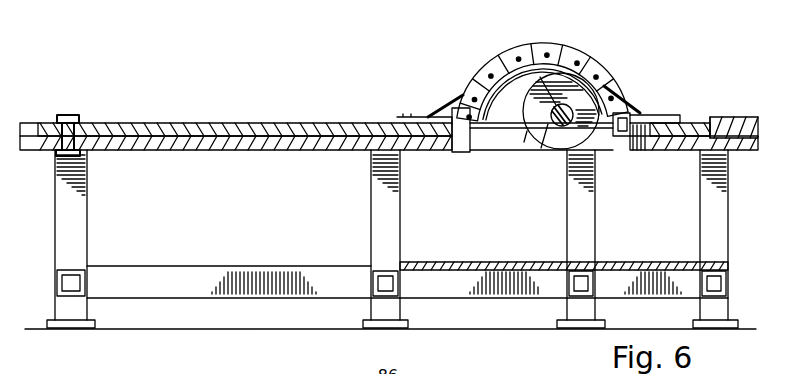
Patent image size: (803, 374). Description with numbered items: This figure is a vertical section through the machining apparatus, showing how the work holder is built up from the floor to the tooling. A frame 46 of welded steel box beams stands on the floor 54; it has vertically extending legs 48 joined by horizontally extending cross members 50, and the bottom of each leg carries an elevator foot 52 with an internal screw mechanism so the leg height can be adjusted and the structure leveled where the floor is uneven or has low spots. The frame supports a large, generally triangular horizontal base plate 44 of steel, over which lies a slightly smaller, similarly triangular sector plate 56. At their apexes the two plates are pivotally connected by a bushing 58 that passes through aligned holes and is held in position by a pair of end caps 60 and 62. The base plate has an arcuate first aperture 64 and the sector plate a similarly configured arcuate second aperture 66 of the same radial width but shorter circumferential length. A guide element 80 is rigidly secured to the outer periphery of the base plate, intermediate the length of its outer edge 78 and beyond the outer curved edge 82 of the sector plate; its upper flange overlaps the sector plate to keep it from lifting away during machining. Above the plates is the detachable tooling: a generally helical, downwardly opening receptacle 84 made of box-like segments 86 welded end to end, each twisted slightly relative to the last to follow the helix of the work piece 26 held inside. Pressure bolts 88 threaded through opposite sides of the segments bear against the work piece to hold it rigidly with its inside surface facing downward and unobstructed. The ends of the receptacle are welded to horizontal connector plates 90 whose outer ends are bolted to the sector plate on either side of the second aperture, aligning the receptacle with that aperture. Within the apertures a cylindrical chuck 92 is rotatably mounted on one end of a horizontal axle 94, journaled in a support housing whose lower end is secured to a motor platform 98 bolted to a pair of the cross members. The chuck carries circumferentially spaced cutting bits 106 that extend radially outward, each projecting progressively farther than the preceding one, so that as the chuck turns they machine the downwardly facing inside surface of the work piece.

The work piece 26 is at (542, 96).
The base plate 44 is at (298, 146).
The frame 46 is at (198, 298).
The legs 48 is at (82, 225).
The cross members 50 is at (255, 268).
The elevator foot 52 is at (97, 322).
The floor 54 is at (293, 329).
The sector plate 56 is at (258, 124).
The bushing 58 is at (84, 123).
The end cap 60 is at (76, 117).
The end cap 62 is at (92, 156).
The first aperture 64 is at (457, 152).
The second aperture 66 is at (650, 150).
The outer edge 78 is at (744, 152).
The guide element 80 is at (737, 117).
The outer curved edge 82 is at (716, 117).
The receptacle 84 is at (597, 58).
The box-like segments 86 is at (494, 68).
The pressure bolts 88 is at (546, 54).
The connector plates 90 is at (437, 110).
The chuck 92 is at (525, 136).
The axle 94 is at (537, 127).
The motor platform 98 is at (455, 262).
The cutting bits 106 is at (591, 153).